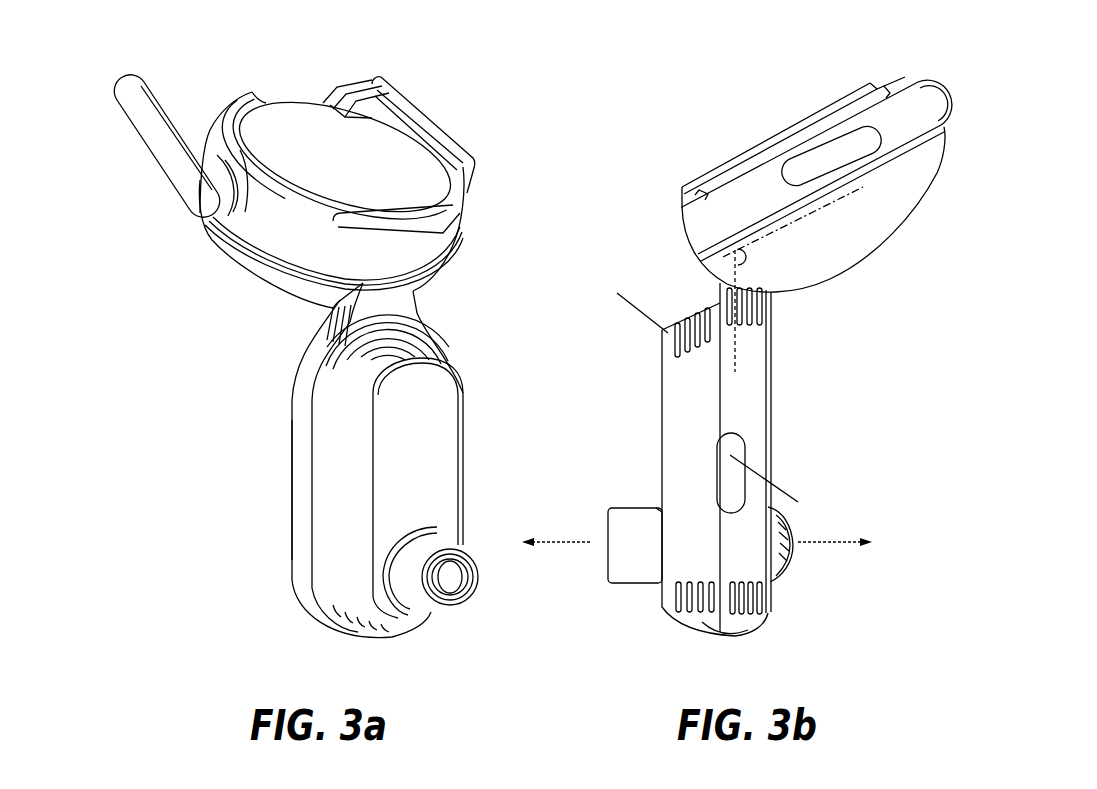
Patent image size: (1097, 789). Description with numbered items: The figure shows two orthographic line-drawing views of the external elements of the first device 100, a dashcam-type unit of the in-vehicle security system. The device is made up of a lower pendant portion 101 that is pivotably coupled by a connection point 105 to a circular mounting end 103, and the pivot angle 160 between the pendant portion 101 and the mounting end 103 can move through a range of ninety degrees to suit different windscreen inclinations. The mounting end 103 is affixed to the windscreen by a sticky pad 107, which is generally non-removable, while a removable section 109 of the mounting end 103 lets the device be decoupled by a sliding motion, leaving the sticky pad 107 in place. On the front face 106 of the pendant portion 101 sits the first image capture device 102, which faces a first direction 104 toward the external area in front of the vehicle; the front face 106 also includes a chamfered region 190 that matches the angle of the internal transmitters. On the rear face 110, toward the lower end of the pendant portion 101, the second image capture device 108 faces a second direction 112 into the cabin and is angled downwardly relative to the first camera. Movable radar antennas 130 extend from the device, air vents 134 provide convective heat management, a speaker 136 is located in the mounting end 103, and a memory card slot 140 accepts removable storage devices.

In FIG. 3A, the first device 100 is at (174, 13).
In FIG. 3B, the first device 100 is at (782, 8).
In FIG. 3A, the pendant portion 101 is at (268, 537).
In FIG. 3A, the first image capture device 102 is at (457, 590).
In FIG. 3B, the first image capture device 102 is at (625, 517).
In FIG. 3A, the mounting end 103 is at (192, 247).
In FIG. 3B, the first direction 104 is at (542, 528).
In FIG. 3A, the connection point 105 is at (415, 297).
In FIG. 3A, the front face 106 is at (395, 458).
In FIG. 3B, the sticky pad 107 is at (777, 128).
In FIG. 3B, the second image capture device 108 is at (792, 550).
In FIG. 3B, the removable section 109 is at (676, 190).
In FIG. 3B, the rear face 110 is at (770, 428).
In FIG. 3B, the second direction 112 is at (864, 543).
In FIG. 3A, the radar antennas 130 is at (130, 84).
In FIG. 3B, the radar antennas 130 is at (902, 107).
In FIG. 3A, the air vents 134 is at (340, 368).
In FIG. 3B, the air vents 134 is at (672, 593).
In FIG. 3B, the speaker 136 is at (838, 268).
In FIG. 3B, the memory card slot 140 is at (768, 313).
In FIG. 3B, the pivot angle 160 is at (763, 310).
In FIG. 3A, the chamfered region 190 is at (345, 408).